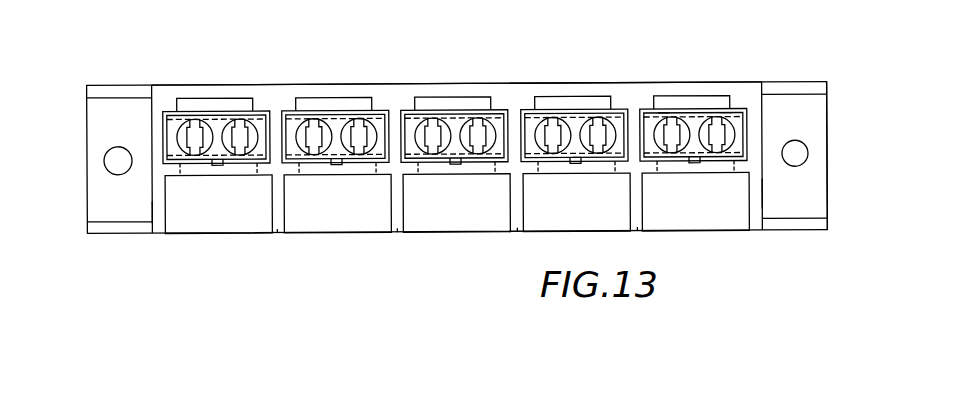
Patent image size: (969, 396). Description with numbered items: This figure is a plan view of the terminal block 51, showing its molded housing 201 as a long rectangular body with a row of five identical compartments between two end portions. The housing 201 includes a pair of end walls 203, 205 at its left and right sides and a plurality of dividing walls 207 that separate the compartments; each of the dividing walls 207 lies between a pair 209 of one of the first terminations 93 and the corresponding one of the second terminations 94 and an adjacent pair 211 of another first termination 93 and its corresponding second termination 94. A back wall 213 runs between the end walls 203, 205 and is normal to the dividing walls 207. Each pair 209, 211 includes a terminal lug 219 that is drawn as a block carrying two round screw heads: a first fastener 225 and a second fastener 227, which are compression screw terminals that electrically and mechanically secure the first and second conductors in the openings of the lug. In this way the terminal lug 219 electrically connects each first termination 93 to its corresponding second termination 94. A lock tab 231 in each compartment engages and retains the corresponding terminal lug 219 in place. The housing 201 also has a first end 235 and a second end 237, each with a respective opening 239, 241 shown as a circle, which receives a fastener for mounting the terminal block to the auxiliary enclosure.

The terminal block 51 is at (182, 278).
The first termination 93 is at (360, 122).
The second termination 94 is at (316, 122).
The molded housing 201 is at (790, 83).
The end wall 203 is at (763, 193).
The end wall 205 is at (152, 207).
The dividing wall 207 is at (277, 228).
The pair of terminations 209 is at (697, 110).
The adjacent pair of terminations 211 is at (571, 92).
The back wall 213 is at (395, 83).
The terminal lug 219 is at (578, 147).
The first fastener 225 is at (711, 118).
The second fastener 227 is at (674, 118).
The lock tab 231 is at (217, 164).
The first end 235 is at (827, 97).
The second end 237 is at (87, 113).
The opening 239 is at (804, 146).
The opening 241 is at (134, 134).